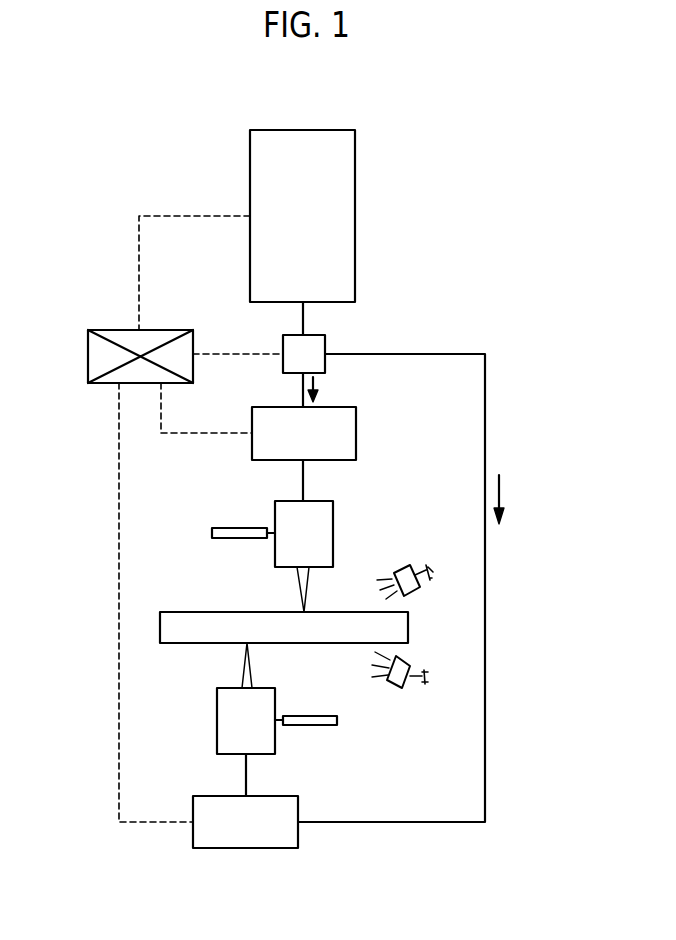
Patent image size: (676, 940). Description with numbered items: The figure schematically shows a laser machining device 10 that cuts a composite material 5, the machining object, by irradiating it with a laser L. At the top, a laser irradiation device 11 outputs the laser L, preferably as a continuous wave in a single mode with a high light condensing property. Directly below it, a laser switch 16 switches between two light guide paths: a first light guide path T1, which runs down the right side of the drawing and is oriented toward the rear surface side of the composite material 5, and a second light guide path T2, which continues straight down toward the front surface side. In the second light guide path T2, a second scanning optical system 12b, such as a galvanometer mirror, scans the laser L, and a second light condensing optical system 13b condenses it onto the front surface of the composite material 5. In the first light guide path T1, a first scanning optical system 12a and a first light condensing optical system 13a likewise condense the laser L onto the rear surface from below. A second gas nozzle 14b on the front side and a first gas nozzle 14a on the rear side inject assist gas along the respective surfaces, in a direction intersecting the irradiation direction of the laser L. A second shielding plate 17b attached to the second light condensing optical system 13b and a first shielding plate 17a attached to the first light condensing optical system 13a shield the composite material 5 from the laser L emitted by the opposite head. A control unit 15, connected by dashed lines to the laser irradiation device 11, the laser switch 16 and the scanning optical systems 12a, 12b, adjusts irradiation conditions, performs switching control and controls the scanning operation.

The laser machining device 10 is at (415, 128).
The laser irradiation device 11 is at (355, 213).
The first scanning optical system 12a is at (262, 796).
The second scanning optical system 12b is at (356, 432).
The first light condensing optical system 13a is at (275, 740).
The second light condensing optical system 13b is at (333, 531).
The first gas nozzle 14a is at (393, 690).
The second gas nozzle 14b is at (406, 563).
The control unit 15 is at (88, 356).
The laser switch 16 is at (311, 335).
The first shielding plate 17a is at (308, 716).
The second shielding plate 17b is at (238, 527).
The composite material 5 is at (245, 612).
The laser L is at (310, 580).
The first light guide path T1 is at (502, 492).
The second light guide path T2 is at (320, 382).